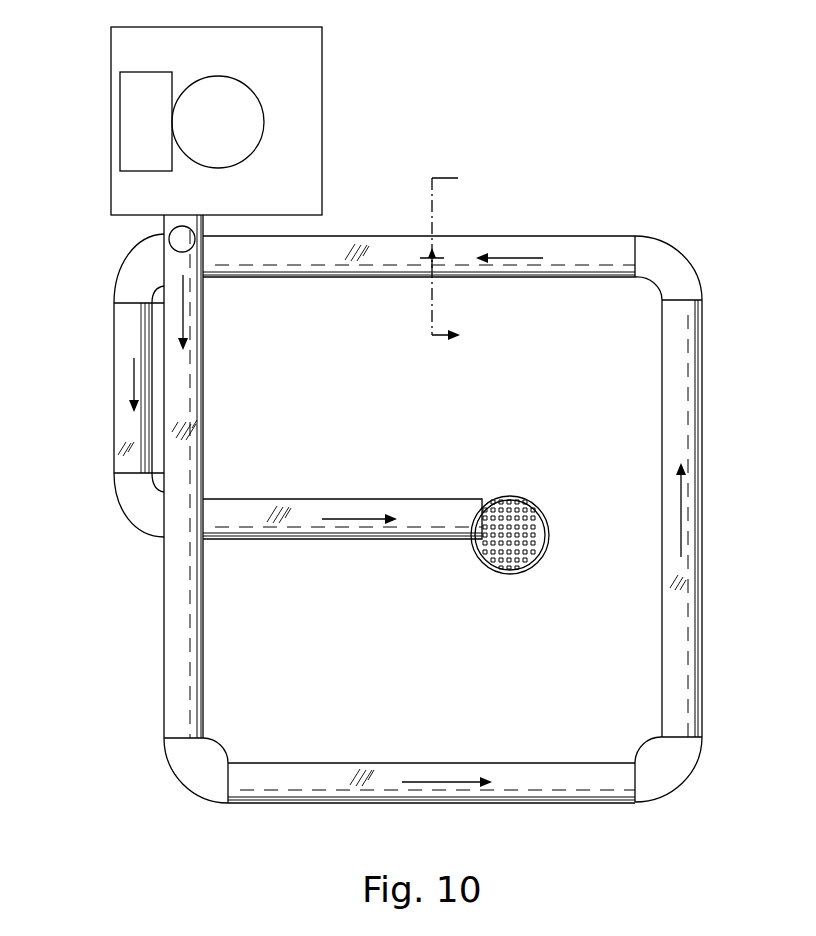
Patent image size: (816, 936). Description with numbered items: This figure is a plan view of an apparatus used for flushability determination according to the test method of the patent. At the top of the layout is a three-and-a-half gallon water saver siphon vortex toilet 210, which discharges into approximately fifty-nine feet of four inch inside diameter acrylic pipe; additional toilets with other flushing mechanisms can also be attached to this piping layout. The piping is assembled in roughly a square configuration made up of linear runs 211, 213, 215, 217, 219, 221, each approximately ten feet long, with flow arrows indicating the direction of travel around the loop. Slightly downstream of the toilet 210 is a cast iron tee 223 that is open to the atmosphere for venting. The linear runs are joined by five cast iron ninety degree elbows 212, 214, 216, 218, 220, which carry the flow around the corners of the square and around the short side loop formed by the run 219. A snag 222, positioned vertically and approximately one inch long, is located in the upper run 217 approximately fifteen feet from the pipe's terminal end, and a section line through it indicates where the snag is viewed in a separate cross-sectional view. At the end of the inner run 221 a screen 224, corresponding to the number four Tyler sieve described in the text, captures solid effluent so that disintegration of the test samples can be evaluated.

The toilet 210 is at (252, 108).
The linear run 211 is at (172, 608).
The cast iron ninety degree elbow 212 is at (192, 777).
The linear run 213 is at (435, 792).
The cast iron ninety degree elbow 214 is at (673, 777).
The linear run 215 is at (692, 507).
The cast iron ninety degree elbow 216 is at (675, 263).
The linear run 217 is at (505, 240).
The cast iron ninety degree elbow 218 is at (133, 267).
The linear run 219 is at (122, 343).
The cast iron ninety degree elbow 220 is at (142, 517).
The linear run 221 is at (359, 508).
The snag 222 is at (432, 262).
The cast iron tee 223 is at (168, 238).
The outlet screen 224 is at (533, 500).